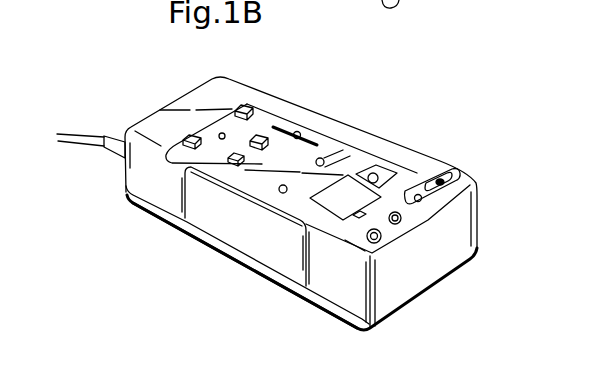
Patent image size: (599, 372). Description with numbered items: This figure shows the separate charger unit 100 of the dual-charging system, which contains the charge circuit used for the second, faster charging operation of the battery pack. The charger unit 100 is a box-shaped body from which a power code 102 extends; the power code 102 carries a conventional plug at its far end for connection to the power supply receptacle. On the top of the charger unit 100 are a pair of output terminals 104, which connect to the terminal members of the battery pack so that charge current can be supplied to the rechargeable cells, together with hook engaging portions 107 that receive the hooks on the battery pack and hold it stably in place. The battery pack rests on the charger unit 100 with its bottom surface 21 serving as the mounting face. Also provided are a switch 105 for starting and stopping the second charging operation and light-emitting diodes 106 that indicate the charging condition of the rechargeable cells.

The charger unit 100 is at (423, 166).
The power code 102 is at (72, 137).
The output terminals 104 is at (262, 136).
The switch 105 is at (457, 174).
The light-emitting diodes 106 is at (398, 222).
The hook engaging portions 107 is at (190, 140).
The bottom surface 21 is at (298, 292).